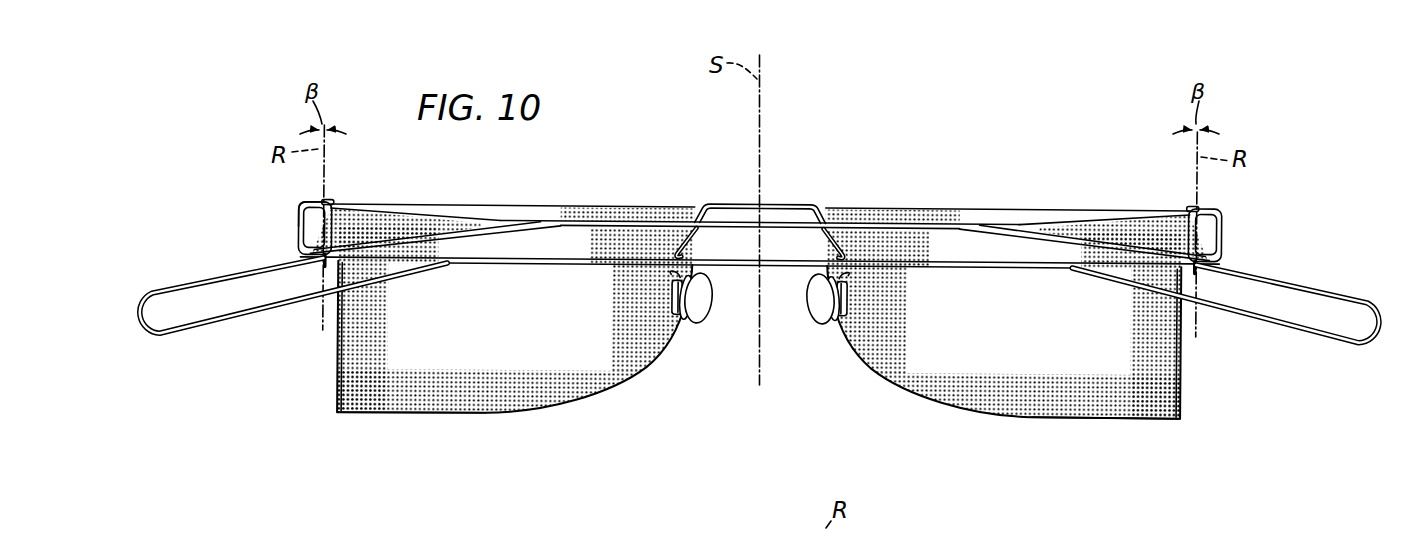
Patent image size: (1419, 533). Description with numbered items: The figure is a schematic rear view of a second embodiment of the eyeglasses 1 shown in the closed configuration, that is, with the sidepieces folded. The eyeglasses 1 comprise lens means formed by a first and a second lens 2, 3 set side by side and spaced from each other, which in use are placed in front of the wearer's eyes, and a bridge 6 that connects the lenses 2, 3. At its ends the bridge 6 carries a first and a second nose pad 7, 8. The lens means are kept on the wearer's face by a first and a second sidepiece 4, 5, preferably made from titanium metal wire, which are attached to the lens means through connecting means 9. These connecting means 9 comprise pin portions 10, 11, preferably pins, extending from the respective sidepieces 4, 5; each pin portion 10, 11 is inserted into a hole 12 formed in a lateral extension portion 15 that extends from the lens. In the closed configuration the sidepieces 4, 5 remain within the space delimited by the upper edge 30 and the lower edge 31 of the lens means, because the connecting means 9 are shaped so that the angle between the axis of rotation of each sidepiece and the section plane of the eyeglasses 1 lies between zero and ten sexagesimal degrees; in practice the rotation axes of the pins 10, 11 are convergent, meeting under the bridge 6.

The eyeglasses 1 is at (903, 150).
The first lens 2 is at (1081, 369).
The second lens 3 is at (517, 393).
The first sidepiece 4 is at (196, 342).
The second sidepiece 5 is at (1318, 348).
The bridge 6 is at (783, 201).
The first nose pad 7 is at (814, 310).
The second nose pad 8 is at (699, 310).
The connecting means 9 is at (278, 194).
The first pin portion 10 is at (1206, 239).
The second pin portion 11 is at (300, 222).
The hole 12 is at (1208, 226).
The extension portion 15 is at (311, 236).
The upper edge of the lens means 30 is at (648, 205).
The lower edge of the lens means 31 is at (427, 414).